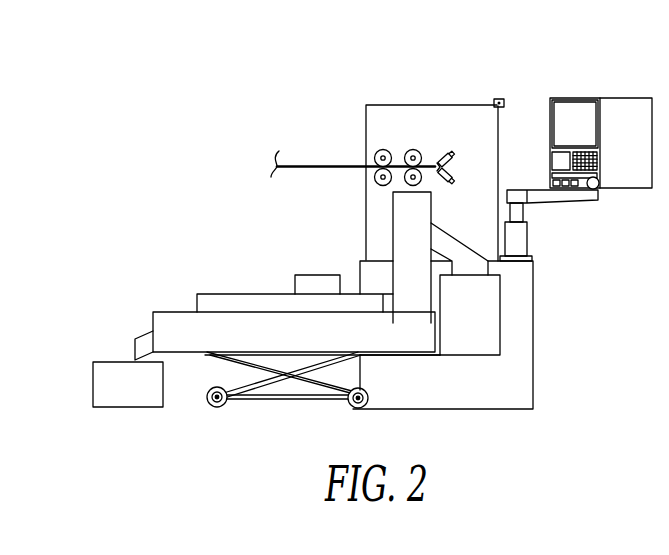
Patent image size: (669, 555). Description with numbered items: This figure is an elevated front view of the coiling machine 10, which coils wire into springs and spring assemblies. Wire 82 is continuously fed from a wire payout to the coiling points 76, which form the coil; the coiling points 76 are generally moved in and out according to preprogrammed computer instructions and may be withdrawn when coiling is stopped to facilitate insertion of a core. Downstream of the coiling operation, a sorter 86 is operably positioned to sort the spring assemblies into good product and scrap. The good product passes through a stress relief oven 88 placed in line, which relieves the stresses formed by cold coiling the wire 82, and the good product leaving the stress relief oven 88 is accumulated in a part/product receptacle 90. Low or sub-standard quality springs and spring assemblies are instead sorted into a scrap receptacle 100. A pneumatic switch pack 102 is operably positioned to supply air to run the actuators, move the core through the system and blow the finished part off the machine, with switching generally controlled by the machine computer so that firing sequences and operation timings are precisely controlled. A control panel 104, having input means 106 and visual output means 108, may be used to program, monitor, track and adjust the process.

The coiling machine 10 is at (238, 98).
The coiling points 76 is at (472, 159).
The wire 82 is at (345, 165).
The sorter 86 is at (441, 224).
The stress relief oven 88 is at (180, 322).
The part/product receptacle 90 is at (108, 368).
The scrap receptacle 100 is at (485, 332).
The pneumatic switch pack 102 is at (494, 100).
The control panel 104 is at (586, 78).
The input means 106 is at (600, 163).
The visual output means 108 is at (577, 132).